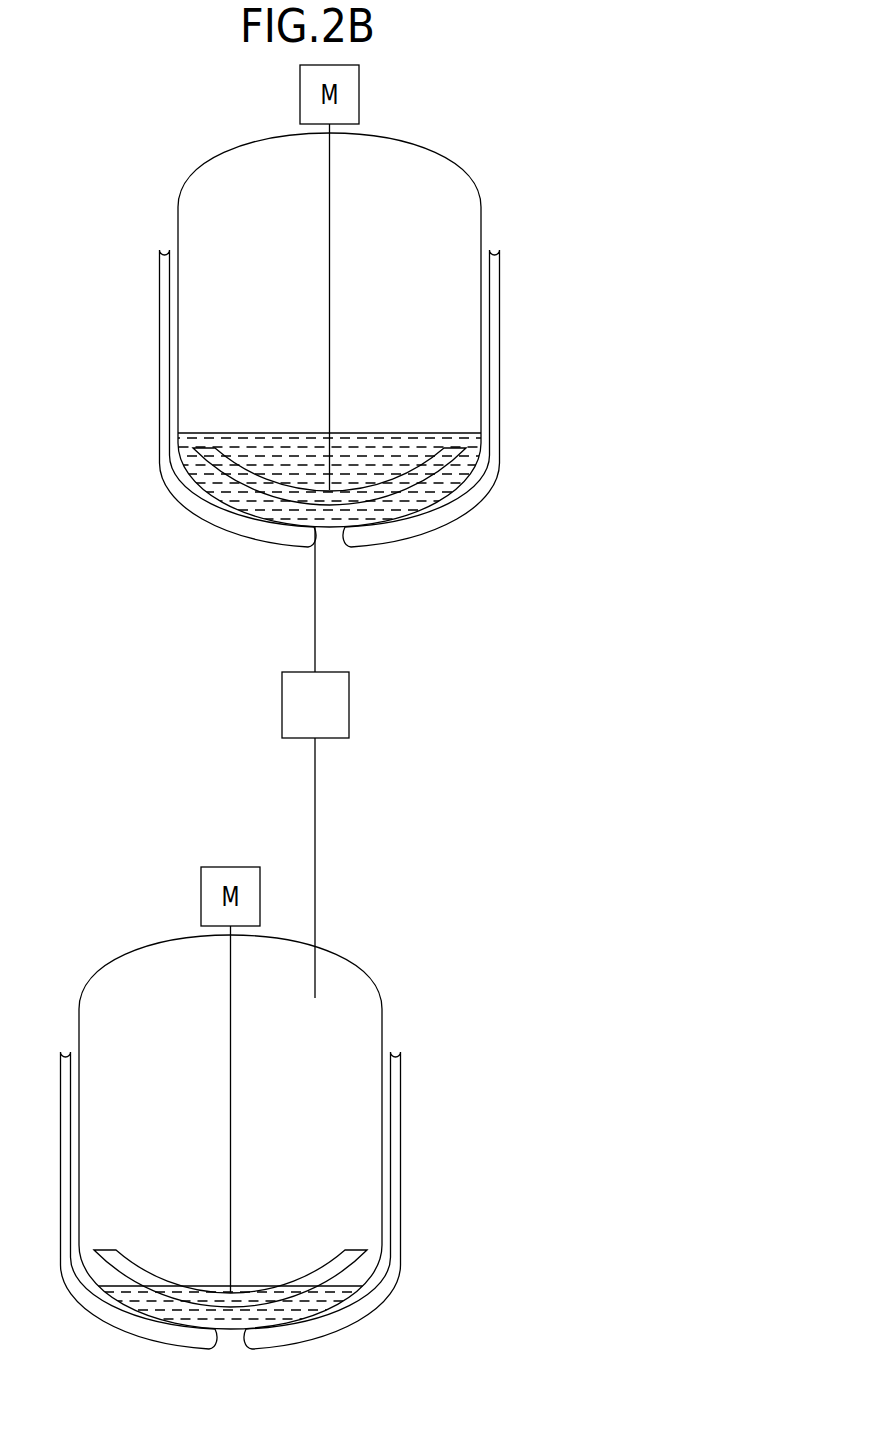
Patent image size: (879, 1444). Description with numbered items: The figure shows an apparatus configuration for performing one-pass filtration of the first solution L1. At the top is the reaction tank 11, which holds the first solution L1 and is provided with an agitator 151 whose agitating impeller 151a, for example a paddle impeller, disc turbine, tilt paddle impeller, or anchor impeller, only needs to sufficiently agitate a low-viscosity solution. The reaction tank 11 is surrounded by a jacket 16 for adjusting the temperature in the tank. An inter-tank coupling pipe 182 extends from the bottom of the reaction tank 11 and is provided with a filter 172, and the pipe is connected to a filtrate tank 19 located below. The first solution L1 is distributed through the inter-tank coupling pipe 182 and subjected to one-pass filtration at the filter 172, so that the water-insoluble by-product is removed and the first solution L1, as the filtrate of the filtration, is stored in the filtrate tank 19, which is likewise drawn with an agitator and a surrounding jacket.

The reaction tank 11 is at (203, 167).
The agitator 151 is at (359, 94).
The agitating impeller 151a is at (398, 487).
The jacket 16 is at (490, 340).
The first solution L1 is at (473, 442).
The inter-tank coupling pipe 182 is at (315, 622).
The filter 172 is at (282, 702).
The filtrate tank 19 is at (107, 968).